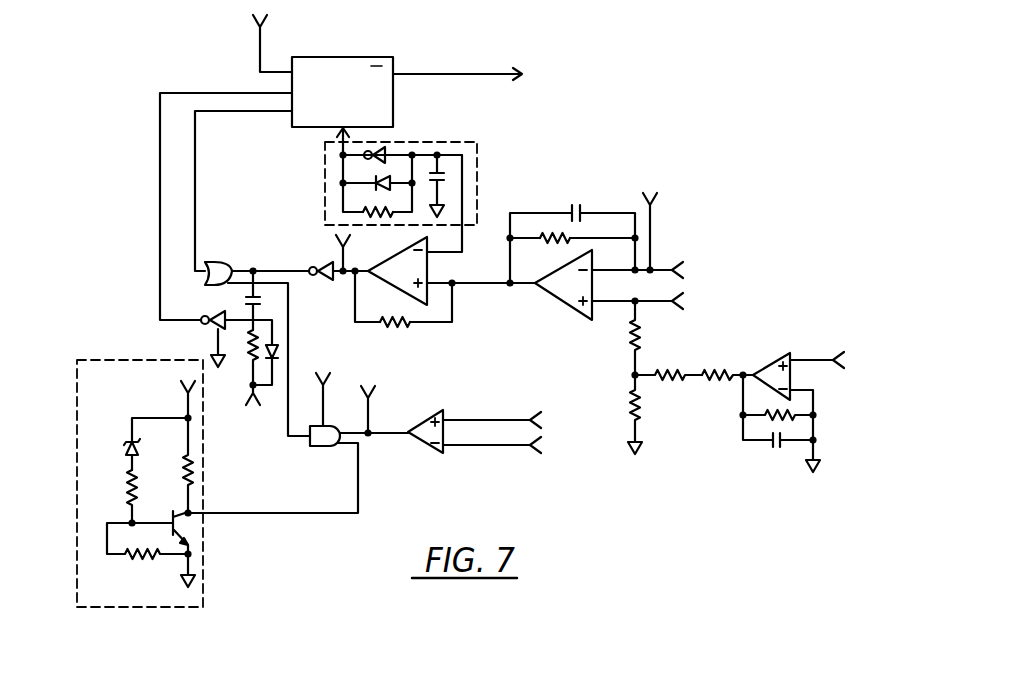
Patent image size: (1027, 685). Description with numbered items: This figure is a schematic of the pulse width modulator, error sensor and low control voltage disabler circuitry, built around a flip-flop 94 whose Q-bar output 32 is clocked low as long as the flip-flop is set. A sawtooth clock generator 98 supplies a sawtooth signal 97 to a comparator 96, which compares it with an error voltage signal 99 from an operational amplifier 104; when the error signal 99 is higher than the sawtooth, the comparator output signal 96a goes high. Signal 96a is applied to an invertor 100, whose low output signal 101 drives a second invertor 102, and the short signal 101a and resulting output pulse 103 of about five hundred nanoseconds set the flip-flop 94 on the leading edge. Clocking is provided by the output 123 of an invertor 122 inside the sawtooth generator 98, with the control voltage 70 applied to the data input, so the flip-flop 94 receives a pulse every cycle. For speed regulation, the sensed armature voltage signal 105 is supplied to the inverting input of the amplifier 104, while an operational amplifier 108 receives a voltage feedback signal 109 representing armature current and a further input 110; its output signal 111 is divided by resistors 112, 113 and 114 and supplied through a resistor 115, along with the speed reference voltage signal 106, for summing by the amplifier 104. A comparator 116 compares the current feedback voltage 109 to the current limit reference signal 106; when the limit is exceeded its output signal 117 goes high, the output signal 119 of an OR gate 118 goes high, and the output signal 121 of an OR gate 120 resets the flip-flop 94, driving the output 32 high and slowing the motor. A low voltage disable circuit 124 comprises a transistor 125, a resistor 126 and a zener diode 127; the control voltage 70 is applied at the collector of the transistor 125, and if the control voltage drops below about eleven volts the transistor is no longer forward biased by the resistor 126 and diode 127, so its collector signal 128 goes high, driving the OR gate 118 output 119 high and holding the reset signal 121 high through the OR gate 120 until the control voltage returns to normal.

The output from Q-bar 32 is at (455, 73).
The control voltage 70 is at (258, 35).
The flip-flop 94 is at (347, 57).
The comparator 96 is at (393, 288).
The output signal of comparator 96a is at (366, 270).
The sawtooth signal 97 is at (462, 172).
The sawtooth clock generator 98 is at (478, 147).
The error voltage signal 99 is at (489, 272).
The invertor 100 is at (313, 283).
The output signal of invertor 101 is at (277, 248).
The signal 101a is at (230, 323).
The invertor 102 is at (205, 315).
The input signal 103 is at (160, 161).
The operational amplifier 104 is at (568, 305).
The sensed armature voltage signal 105 is at (656, 268).
The speed reference voltage signal 106 is at (658, 305).
The operational amplifier 108 is at (772, 356).
The voltage feedback signal 109 is at (815, 358).
The input line 110 is at (813, 389).
The output signal of amplifier 111 is at (736, 382).
The resistor 112 is at (717, 369).
The resistor 113 is at (670, 369).
The resistor 114 is at (630, 412).
The resistor 115 is at (630, 345).
The comparator 116 is at (428, 415).
The comparator output signal 117 is at (402, 437).
The OR gate 118 is at (332, 426).
The output signal of OR gate 119 is at (288, 436).
The OR gate 120 is at (212, 262).
The output signal of OR gate 121 is at (195, 197).
The invertor 122 is at (386, 150).
The output of invertor 123 is at (338, 137).
The low voltage disable circuit 124 is at (165, 607).
The transistor 125 is at (196, 531).
The resistor 126 is at (122, 497).
The zener diode 127 is at (125, 455).
The signal 128 is at (333, 514).